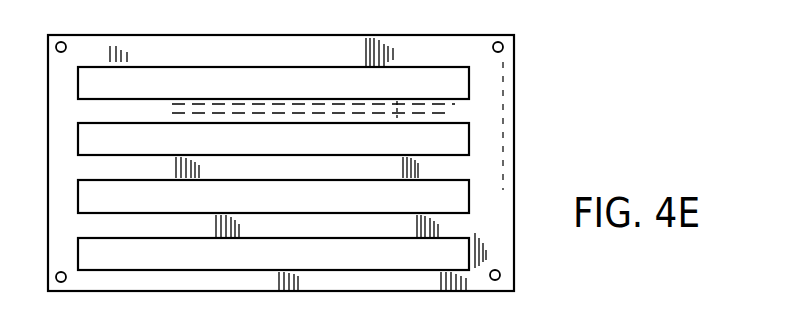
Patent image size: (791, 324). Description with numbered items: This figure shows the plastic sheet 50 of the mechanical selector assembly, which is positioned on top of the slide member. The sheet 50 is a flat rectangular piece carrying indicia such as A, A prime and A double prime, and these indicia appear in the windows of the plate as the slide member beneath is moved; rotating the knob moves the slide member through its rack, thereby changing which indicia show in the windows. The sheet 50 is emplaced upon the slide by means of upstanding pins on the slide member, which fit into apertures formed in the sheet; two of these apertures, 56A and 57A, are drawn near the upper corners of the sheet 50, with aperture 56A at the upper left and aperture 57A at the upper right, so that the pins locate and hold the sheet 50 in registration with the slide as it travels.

The plastic sheet 50 is at (503, 92).
The aperture 56A is at (61, 41).
The aperture 57A is at (499, 41).